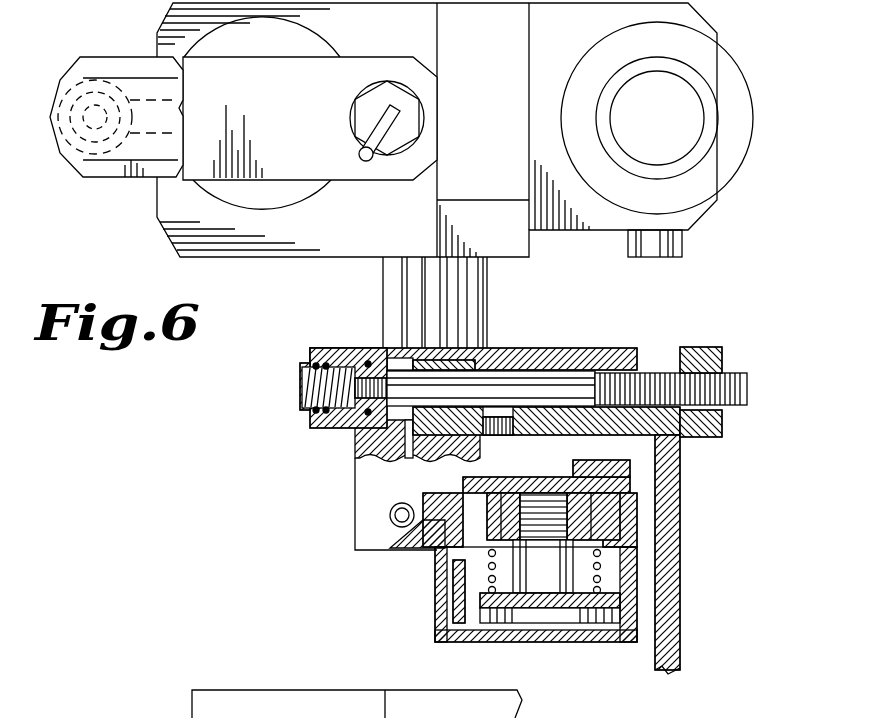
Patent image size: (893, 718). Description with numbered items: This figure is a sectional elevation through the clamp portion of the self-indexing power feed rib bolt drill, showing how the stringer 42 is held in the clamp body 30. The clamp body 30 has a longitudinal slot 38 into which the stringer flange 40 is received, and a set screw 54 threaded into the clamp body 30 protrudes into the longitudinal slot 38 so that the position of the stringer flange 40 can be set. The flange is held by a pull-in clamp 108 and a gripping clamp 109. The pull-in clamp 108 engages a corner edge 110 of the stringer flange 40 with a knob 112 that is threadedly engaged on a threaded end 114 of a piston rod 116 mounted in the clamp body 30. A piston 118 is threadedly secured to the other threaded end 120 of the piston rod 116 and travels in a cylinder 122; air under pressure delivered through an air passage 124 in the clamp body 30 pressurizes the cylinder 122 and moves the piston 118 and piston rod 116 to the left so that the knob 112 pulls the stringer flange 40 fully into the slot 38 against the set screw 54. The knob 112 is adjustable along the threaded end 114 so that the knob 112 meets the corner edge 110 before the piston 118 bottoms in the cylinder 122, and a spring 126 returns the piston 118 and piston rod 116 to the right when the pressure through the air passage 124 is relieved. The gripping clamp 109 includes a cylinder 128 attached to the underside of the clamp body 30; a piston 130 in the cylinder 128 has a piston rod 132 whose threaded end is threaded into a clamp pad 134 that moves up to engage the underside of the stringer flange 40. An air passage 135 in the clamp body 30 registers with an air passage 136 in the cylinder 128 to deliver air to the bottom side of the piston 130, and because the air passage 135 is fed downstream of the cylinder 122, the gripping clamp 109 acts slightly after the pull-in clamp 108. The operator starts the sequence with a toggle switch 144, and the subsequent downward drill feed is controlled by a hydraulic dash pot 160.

The clamp body 30 is at (500, 347).
The longitudinal slot 38 is at (678, 503).
The stringer flange 40 is at (548, 432).
The stringer 42 is at (694, 629).
The set screw 54 is at (488, 430).
The pull-in clamp 108 is at (652, 362).
The gripping clamp 109 is at (543, 660).
The corner edge 110 is at (682, 453).
The knob 112 is at (723, 360).
The threaded end 114 is at (606, 372).
The piston rod 116 is at (550, 348).
The piston 118 is at (368, 356).
The threaded end 120 is at (322, 350).
The cylinder 122 is at (337, 437).
The air passage 124 is at (402, 462).
The spring 126 is at (302, 371).
The cylinder 128 is at (437, 630).
The piston 130 is at (571, 637).
The piston rod 132 is at (480, 645).
The clamp pad 134 is at (600, 448).
The air passage 135 is at (450, 535).
The air passage 136 is at (452, 607).
The toggle switch 144 is at (352, 116).
The hydraulic dash pot 160 is at (43, 133).